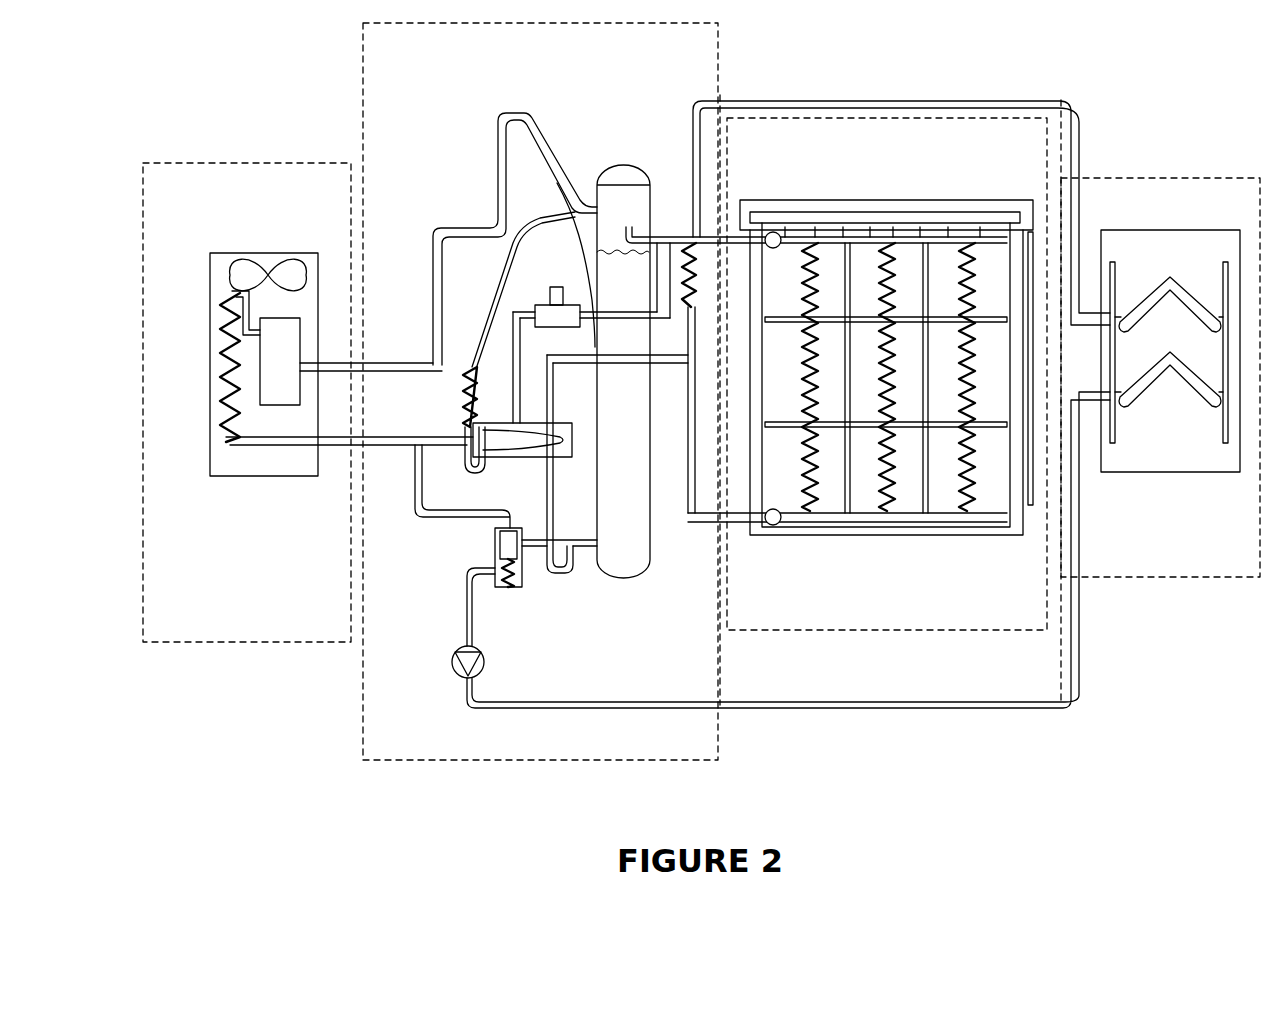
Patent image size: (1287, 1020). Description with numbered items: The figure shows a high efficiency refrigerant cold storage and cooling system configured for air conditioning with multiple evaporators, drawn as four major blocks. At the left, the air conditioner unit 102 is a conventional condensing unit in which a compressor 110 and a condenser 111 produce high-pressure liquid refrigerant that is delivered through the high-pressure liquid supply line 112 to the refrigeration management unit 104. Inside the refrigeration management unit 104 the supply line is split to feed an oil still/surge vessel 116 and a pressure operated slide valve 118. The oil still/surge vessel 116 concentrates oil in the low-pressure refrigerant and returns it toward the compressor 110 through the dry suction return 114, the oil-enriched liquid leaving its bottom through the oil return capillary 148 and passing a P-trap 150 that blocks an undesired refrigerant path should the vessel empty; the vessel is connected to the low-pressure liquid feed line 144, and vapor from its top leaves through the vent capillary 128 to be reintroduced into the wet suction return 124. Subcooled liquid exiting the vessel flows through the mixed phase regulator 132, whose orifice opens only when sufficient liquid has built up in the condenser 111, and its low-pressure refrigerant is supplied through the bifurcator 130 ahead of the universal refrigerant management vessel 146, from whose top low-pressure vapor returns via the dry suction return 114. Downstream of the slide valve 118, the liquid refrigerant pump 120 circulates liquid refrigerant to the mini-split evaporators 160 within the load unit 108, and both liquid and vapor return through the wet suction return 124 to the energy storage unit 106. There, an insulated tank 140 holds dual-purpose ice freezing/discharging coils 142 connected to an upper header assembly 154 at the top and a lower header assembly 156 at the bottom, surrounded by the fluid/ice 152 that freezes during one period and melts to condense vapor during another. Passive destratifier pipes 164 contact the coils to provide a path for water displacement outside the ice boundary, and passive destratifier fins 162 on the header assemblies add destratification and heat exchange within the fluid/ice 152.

The air conditioner unit 102 is at (313, 643).
The refrigeration management unit 104 is at (500, 763).
The energy storage unit 106 is at (862, 700).
The load unit 108 is at (1177, 580).
The compressor 110 is at (284, 318).
The condenser 111 is at (212, 333).
The high-pressure liquid supply line 112 is at (337, 447).
The dry suction return 114 is at (340, 364).
The oil still/surge vessel 116 is at (575, 445).
The pressure operated slide valve 118 is at (495, 540).
The liquid refrigerant pump 120 is at (455, 660).
The wet suction return 124 is at (1079, 106).
The vent capillary 128 is at (688, 378).
The bifurcator 130 is at (690, 232).
The mixed phase regulator 132 is at (554, 287).
The insulated tank 140 is at (858, 545).
The ice freezing/discharging coils 142 is at (972, 505).
The low-pressure liquid feed line 144 is at (557, 183).
The universal refrigerant management vessel (URMV) 146 is at (615, 170).
The oil return capillary 148 is at (460, 372).
The P-trap 150 is at (570, 576).
The fluid/ice 152 is at (997, 257).
The upper header assembly 154 is at (935, 223).
The lower header assembly 156 is at (905, 530).
The mini-split evaporators 160 is at (1096, 473).
The passive destratifier fins 162 is at (893, 230).
The passive destratifier pipes 164 is at (858, 450).